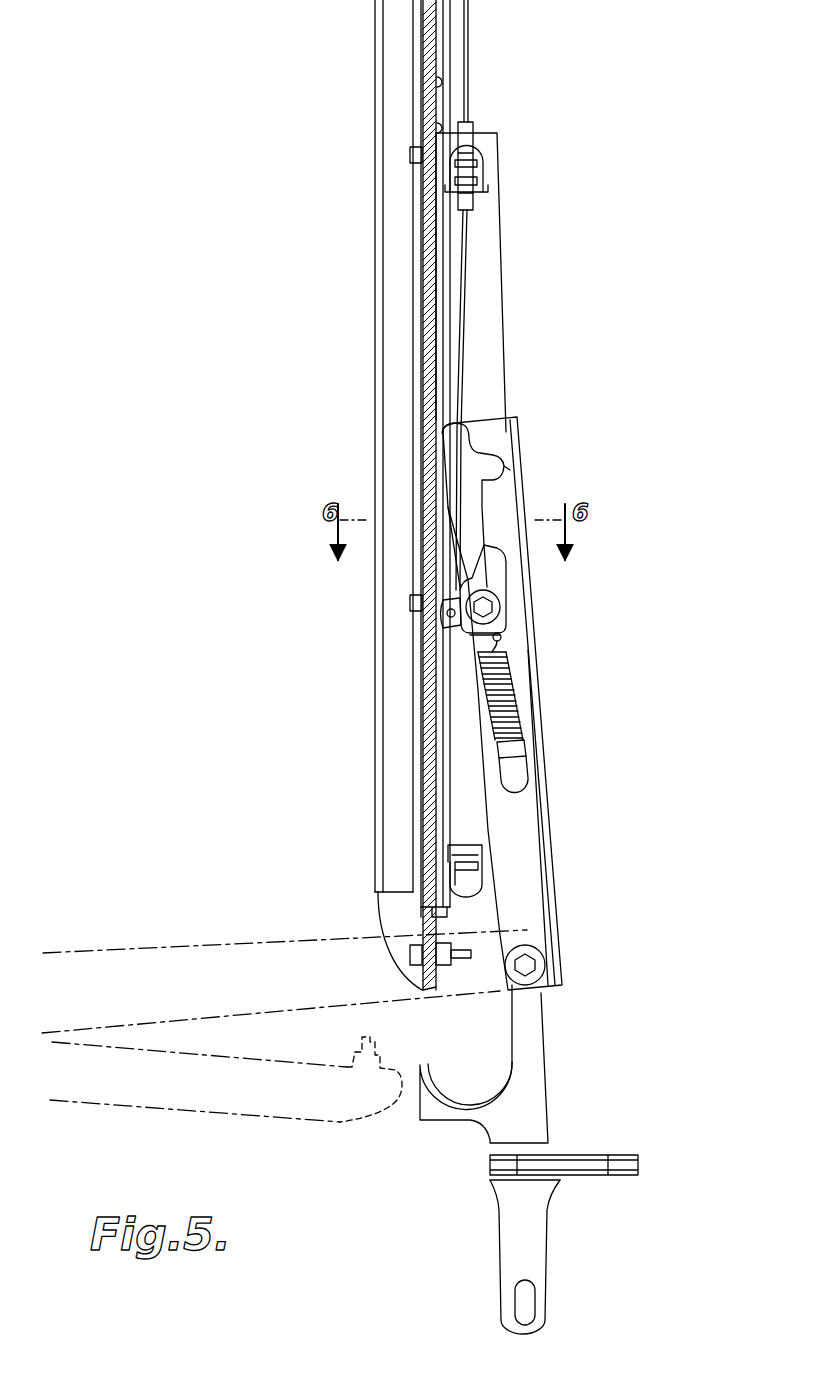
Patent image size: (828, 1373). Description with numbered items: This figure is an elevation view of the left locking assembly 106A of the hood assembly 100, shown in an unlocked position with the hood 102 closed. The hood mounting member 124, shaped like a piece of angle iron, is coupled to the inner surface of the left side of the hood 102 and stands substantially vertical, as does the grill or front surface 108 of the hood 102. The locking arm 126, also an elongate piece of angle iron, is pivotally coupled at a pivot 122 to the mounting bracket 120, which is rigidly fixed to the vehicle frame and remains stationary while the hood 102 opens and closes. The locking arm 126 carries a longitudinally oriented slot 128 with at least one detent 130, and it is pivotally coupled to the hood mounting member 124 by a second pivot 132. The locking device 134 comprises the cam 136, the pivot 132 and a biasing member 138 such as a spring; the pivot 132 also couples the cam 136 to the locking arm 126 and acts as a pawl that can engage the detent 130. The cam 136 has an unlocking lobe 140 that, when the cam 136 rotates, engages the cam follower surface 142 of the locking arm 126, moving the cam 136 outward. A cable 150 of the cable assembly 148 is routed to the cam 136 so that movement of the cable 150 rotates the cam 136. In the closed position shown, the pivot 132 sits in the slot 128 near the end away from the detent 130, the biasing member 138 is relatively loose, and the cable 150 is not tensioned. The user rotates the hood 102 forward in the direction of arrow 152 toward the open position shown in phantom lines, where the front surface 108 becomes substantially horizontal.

The hood assembly 100 is at (216, 176).
The hood 102 is at (425, 270).
The left locking assembly 106A is at (592, 163).
The front surface 108 is at (375, 395).
The mounting bracket 120 is at (548, 1070).
The pivot 122 is at (528, 960).
The hood mounting member 124 is at (503, 305).
The locking arm 126 is at (527, 503).
The slot 128 is at (497, 548).
The detent 130 is at (507, 430).
The second pivot 132 is at (500, 634).
The locking device 134 is at (582, 628).
The cam 136 is at (470, 635).
The biasing member 138 is at (510, 690).
The unlocking lobe 140 is at (497, 608).
The cam follower surface 142 is at (510, 468).
The cable assembly 148 is at (509, 116).
The cable 150 is at (467, 267).
The arrow 152 is at (370, 815).